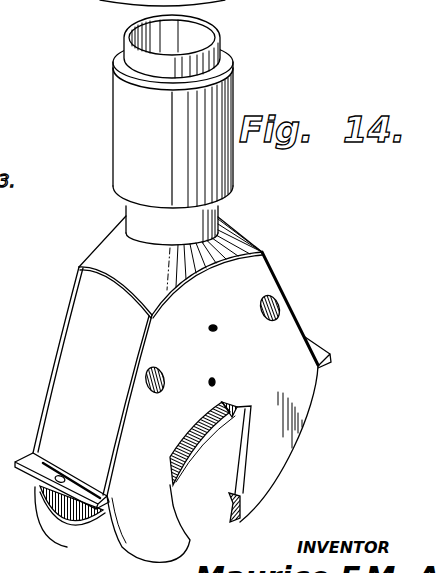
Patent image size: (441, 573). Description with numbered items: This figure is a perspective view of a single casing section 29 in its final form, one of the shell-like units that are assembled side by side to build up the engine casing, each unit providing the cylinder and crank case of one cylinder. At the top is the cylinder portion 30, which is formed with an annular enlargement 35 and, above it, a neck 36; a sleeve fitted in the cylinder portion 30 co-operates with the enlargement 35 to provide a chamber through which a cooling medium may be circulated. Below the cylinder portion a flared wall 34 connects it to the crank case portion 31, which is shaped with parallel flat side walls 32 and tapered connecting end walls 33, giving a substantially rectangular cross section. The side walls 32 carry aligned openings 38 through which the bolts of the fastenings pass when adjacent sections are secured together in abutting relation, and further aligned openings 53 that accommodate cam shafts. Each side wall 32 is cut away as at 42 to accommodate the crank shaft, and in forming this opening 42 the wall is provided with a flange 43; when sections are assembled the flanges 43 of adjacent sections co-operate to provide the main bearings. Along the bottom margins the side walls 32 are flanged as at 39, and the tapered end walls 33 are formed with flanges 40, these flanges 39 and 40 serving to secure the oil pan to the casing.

The section 29 is at (245, 222).
The cylinder portion 30 is at (133, 212).
The crank case portion 31 is at (53, 343).
The side walls 32 is at (283, 338).
The end walls 33 is at (62, 380).
The flared wall 34 is at (108, 247).
The annular enlargement 35 is at (127, 133).
The neck 36 is at (216, 21).
The openings 38 is at (215, 375).
The flanges 39 is at (103, 520).
The flanges 40 is at (33, 462).
The openings 42 is at (206, 499).
The flanges 43 is at (248, 478).
The openings 53 is at (161, 393).